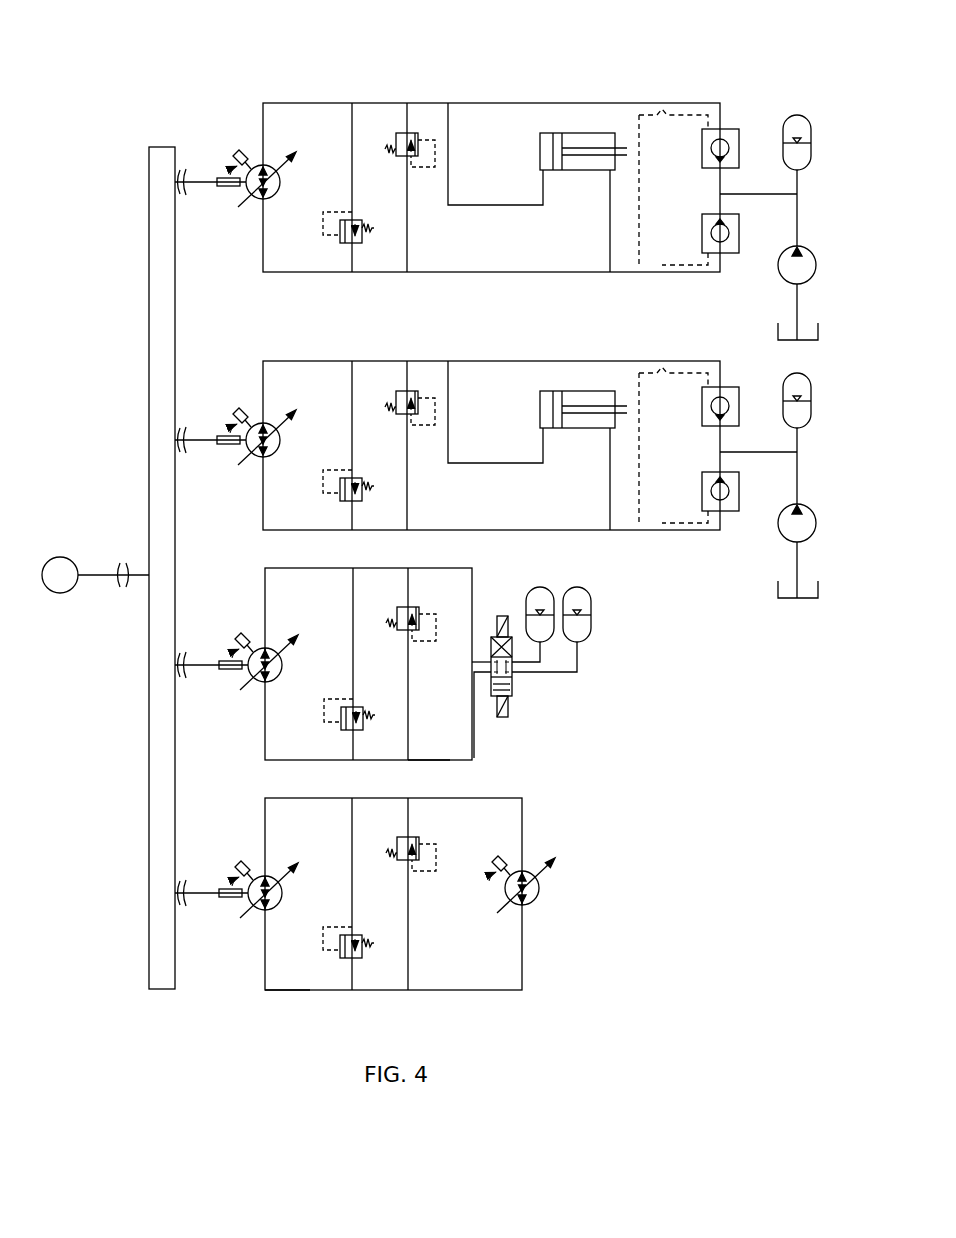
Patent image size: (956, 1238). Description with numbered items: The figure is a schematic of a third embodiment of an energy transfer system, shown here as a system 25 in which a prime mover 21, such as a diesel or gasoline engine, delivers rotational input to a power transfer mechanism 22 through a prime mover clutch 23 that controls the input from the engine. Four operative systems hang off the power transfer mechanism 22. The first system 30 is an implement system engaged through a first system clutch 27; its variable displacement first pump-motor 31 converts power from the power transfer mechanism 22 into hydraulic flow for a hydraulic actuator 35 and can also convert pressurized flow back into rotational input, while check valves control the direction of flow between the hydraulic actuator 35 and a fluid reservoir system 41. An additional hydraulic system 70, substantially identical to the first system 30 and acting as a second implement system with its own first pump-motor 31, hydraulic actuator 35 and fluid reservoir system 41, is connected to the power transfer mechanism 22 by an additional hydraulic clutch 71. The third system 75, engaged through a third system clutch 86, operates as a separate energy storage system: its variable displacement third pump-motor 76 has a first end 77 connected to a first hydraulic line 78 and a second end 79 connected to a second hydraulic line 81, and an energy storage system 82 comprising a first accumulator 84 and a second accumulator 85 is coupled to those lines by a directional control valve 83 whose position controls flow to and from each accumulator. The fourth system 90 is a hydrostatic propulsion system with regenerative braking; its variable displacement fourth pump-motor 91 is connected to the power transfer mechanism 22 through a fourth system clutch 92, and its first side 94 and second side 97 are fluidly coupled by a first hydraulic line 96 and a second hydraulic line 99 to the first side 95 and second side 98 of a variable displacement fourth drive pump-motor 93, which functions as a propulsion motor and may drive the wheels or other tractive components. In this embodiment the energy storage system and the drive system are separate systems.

The prime mover 21 is at (58, 581).
The power transfer mechanism 22 is at (162, 990).
The prime mover clutch 23 is at (125, 560).
The hydraulic system 25 is at (116, 538).
The first system clutch 27 is at (187, 166).
The first system 30 is at (370, 93).
The first pump-motor 31 is at (283, 182).
The hydraulic actuator 35 is at (578, 133).
The fluid reservoir system 41 is at (810, 190).
The additional hydraulic system 70 is at (370, 352).
The additional hydraulic clutch 71 is at (187, 424).
The third system 75 is at (464, 663).
The third pump-motor 76 is at (284, 665).
The first end 77 is at (268, 650).
The first hydraulic line 78 is at (374, 568).
The second end 79 is at (266, 684).
The second hydraulic line 81 is at (425, 762).
The energy storage system 82 is at (584, 649).
The directional control valve 83 is at (513, 685).
The first accumulator 84 is at (540, 587).
The second accumulator 85 is at (577, 587).
The third system clutch 86 is at (187, 650).
The fourth system 90 is at (420, 919).
The fourth pump-motor 91 is at (284, 893).
The fourth system clutch 92 is at (183, 906).
The fourth drive pump-motor 93 is at (541, 891).
The first side 94 is at (266, 876).
The first side 95 is at (524, 870).
The first hydraulic line 96 is at (490, 798).
The second side 97 is at (266, 911).
The second side 98 is at (524, 906).
The second hydraulic line 99 is at (302, 990).